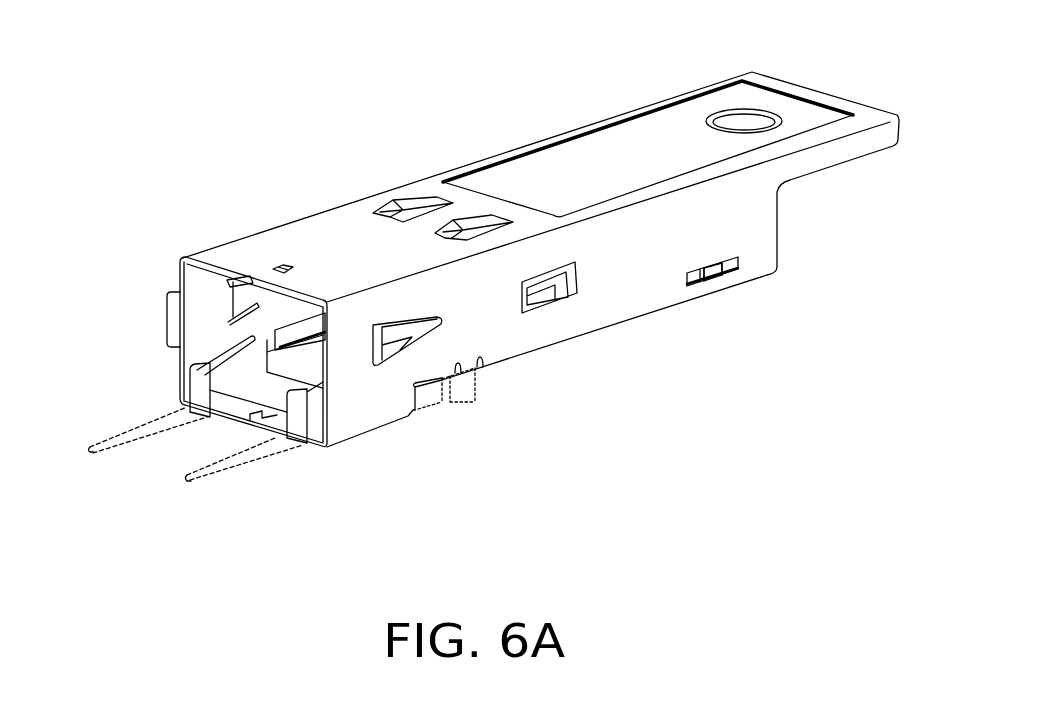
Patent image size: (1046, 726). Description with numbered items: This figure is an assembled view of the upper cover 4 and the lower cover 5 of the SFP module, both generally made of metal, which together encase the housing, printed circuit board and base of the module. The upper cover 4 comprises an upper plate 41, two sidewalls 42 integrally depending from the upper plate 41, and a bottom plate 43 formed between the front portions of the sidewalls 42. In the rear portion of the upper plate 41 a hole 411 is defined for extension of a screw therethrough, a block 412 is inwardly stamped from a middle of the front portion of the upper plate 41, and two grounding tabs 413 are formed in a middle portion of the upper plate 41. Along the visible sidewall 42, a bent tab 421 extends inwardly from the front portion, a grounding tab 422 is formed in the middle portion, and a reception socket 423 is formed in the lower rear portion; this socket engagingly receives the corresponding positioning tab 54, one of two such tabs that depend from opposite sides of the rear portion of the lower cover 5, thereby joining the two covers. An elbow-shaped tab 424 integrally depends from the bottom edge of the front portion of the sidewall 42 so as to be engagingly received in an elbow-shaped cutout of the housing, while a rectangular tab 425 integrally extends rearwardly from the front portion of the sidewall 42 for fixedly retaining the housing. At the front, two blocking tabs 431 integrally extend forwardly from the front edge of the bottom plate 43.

The upper cover 4 is at (476, 281).
The lower cover 5 is at (293, 332).
The upper plate 41 is at (620, 142).
The hole 411 is at (745, 126).
The block 412 is at (288, 263).
The grounding tabs 413 is at (415, 197).
The sidewall 42 is at (652, 285).
The bent tab 421 is at (408, 328).
The grounding tab 422 is at (560, 285).
The reception socket 423 is at (733, 273).
The elbow-shaped tab 424 is at (468, 387).
The rectangular tab 425 is at (430, 397).
The bottom plate 43 is at (238, 407).
The blocking tabs 431 is at (153, 420).
The positioning tab 54 is at (707, 272).